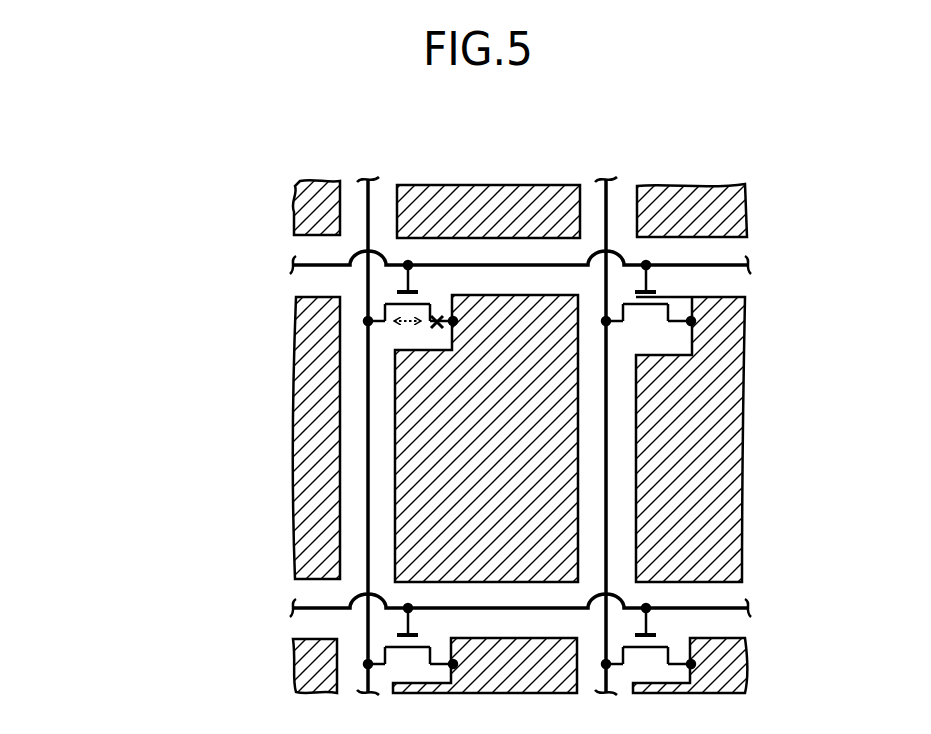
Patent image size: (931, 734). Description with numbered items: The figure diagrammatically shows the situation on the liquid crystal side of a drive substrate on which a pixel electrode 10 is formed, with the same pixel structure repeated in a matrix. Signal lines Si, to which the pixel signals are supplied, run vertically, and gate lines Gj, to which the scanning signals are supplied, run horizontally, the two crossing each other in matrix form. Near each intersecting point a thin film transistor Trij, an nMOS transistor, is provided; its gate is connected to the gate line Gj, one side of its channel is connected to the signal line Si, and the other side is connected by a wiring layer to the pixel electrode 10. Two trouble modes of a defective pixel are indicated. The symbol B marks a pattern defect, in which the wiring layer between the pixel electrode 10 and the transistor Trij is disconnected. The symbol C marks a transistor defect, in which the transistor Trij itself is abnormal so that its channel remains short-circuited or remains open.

The pixel electrode 10 is at (496, 467).
The signal line Si is at (487, 419).
The gate line Gj is at (504, 432).
The thin film transistor Trij is at (386, 291).
The pattern defect B is at (439, 316).
The transistor defect C is at (406, 326).